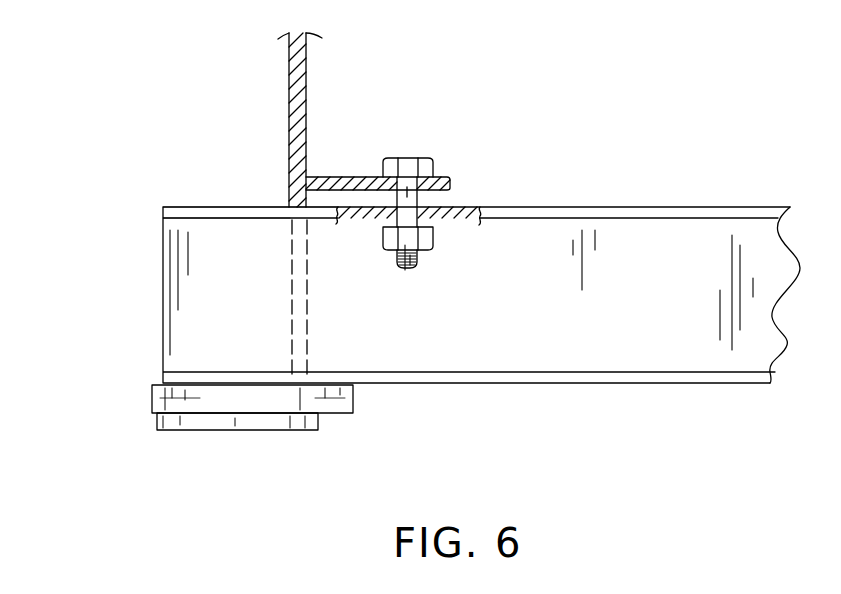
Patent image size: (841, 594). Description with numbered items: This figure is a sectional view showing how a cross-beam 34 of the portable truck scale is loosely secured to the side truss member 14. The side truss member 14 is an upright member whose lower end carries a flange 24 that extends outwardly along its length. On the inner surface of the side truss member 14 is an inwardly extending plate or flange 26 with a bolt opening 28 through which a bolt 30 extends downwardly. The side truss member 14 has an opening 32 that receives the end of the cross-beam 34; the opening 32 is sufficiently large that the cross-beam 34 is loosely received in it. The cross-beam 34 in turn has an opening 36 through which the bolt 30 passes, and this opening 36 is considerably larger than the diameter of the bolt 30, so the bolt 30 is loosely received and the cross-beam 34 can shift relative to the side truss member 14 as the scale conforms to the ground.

The first side truss member 14 is at (314, 93).
The flange 24 is at (152, 388).
The inwardly extending plate or flange 26 is at (340, 177).
The bolt openings 28 is at (450, 176).
The bolt 30 is at (408, 204).
The openings 32 is at (290, 204).
The cross-beams 34 is at (720, 205).
The opening 36 is at (430, 217).